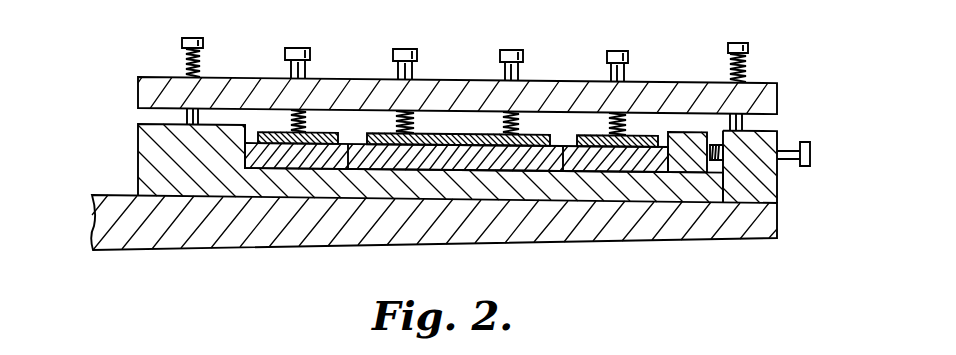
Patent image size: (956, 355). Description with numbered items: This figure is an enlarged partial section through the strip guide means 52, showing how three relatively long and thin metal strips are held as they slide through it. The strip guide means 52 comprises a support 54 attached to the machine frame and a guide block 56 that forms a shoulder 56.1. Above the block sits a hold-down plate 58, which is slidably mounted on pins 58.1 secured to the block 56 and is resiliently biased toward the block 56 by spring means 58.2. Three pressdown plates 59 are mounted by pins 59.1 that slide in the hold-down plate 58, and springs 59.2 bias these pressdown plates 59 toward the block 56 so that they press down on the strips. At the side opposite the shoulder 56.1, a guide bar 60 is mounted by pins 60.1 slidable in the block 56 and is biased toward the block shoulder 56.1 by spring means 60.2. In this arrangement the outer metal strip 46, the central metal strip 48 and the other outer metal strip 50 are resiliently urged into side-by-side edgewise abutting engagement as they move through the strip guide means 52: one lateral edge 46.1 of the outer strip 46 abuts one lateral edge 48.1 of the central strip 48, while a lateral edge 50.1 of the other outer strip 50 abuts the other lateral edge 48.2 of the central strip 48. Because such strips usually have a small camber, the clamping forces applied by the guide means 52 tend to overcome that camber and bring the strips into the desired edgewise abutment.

The outer metal strip 46 is at (305, 165).
The lateral edge of outer metal strip 46.1 is at (346, 158).
The central metal strip 48 is at (478, 165).
The lateral edge of central strip 48.1 is at (349, 160).
The other lateral edge of central strip 48.2 is at (560, 150).
The other outer metal strip 50 is at (610, 166).
The lateral edge of other outer strip 50.1 is at (566, 160).
The strip guide means 52 is at (782, 83).
The support 54 is at (205, 249).
The guide block 56 is at (148, 152).
The shoulder 56.1 is at (251, 131).
The hold-down plate 58 is at (140, 81).
The pins 58.1 is at (191, 38).
The spring means 58.2 is at (190, 62).
The pressdown plates 59 is at (477, 78).
The pins 59.1 is at (297, 49).
The springs 59.2 is at (306, 120).
The guide bar 60 is at (668, 128).
The pins 60.1 is at (800, 143).
The spring means 60.2 is at (718, 152).